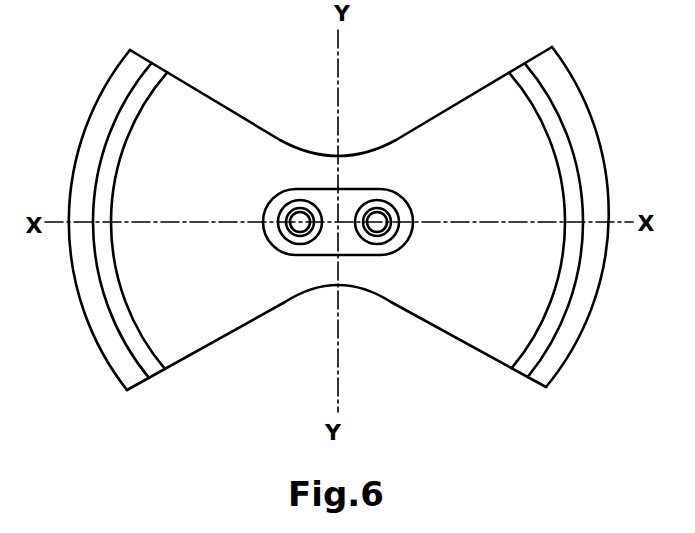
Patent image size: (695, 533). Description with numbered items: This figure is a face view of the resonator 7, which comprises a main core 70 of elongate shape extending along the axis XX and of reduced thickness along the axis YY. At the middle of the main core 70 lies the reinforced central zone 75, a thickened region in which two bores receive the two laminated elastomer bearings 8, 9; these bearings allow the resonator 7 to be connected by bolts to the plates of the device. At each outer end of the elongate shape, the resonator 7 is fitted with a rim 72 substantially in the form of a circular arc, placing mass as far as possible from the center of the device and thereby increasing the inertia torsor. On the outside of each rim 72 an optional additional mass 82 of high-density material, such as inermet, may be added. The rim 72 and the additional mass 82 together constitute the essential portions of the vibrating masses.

The resonator 7 is at (606, 276).
The laminated elastomer bearing 8 is at (289, 246).
The laminated elastomer bearing 9 is at (385, 245).
The main core 70 is at (474, 332).
The rim 72 is at (517, 366).
The reinforced central zone 75 is at (363, 188).
The additional mass 82 is at (556, 354).